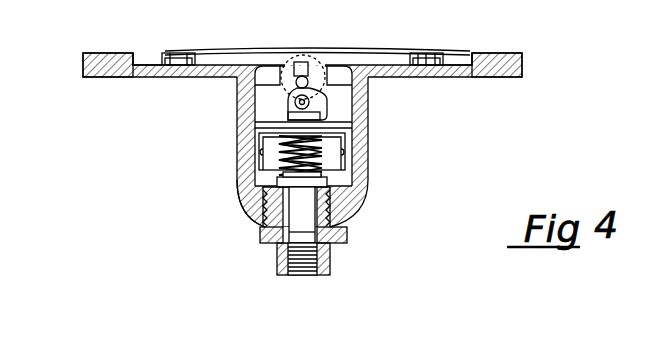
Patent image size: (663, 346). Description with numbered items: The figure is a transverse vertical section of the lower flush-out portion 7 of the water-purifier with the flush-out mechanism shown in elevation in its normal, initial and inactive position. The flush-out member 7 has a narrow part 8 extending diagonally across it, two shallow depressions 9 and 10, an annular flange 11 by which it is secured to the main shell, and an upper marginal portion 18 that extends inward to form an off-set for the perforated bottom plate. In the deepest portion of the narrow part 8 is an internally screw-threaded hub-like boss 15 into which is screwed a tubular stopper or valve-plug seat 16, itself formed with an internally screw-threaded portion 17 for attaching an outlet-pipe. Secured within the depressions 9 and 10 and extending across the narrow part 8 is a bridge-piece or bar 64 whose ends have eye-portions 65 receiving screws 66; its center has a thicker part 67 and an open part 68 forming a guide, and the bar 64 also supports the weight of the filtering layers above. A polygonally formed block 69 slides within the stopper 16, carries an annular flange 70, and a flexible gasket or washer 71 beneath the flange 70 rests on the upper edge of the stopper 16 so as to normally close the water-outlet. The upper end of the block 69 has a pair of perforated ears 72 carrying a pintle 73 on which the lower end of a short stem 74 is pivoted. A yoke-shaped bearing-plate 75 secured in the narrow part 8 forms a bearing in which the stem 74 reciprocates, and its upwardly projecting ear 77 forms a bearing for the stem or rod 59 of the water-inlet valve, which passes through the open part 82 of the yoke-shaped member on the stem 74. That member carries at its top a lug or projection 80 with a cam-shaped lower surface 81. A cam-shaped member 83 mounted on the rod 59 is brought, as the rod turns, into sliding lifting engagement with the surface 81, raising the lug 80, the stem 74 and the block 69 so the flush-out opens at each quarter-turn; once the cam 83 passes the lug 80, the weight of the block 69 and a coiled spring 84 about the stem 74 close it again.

The lower flush-out portion 7 is at (258, 223).
The narrow part 8 is at (343, 92).
The shallow depression 9 is at (148, 62).
The shallow depression 10 is at (463, 57).
The annular flange 11 is at (87, 68).
The hub-like member or boss 15 is at (347, 237).
The stopper or valve-plug seat 16 is at (332, 264).
The internally screw-threaded portion 17 is at (312, 268).
The upper marginal portion 18 is at (129, 53).
The stem or rod 59 is at (438, 83).
The bridge-piece or bar 64 is at (249, 51).
The eye-portion 65 is at (176, 64).
The screw 66 is at (186, 53).
The thicker part 67 is at (335, 78).
The open part 68 is at (298, 62).
The polygonally formed member or block 69 is at (337, 209).
The annular flange 70 is at (332, 181).
The gasket or washer 71 is at (262, 198).
The perforated ears 72 is at (345, 161).
The pintle 73 is at (272, 181).
The short stem 74 is at (345, 136).
The bearing-plate 75 is at (268, 131).
The upwardly projecting member or ear 77 is at (282, 92).
The lug or projection 80 is at (305, 76).
The lower surface 81 is at (283, 107).
The open part 82 is at (252, 120).
The cam-shaped member or element 83 is at (311, 103).
The coiled spring 84 is at (287, 162).